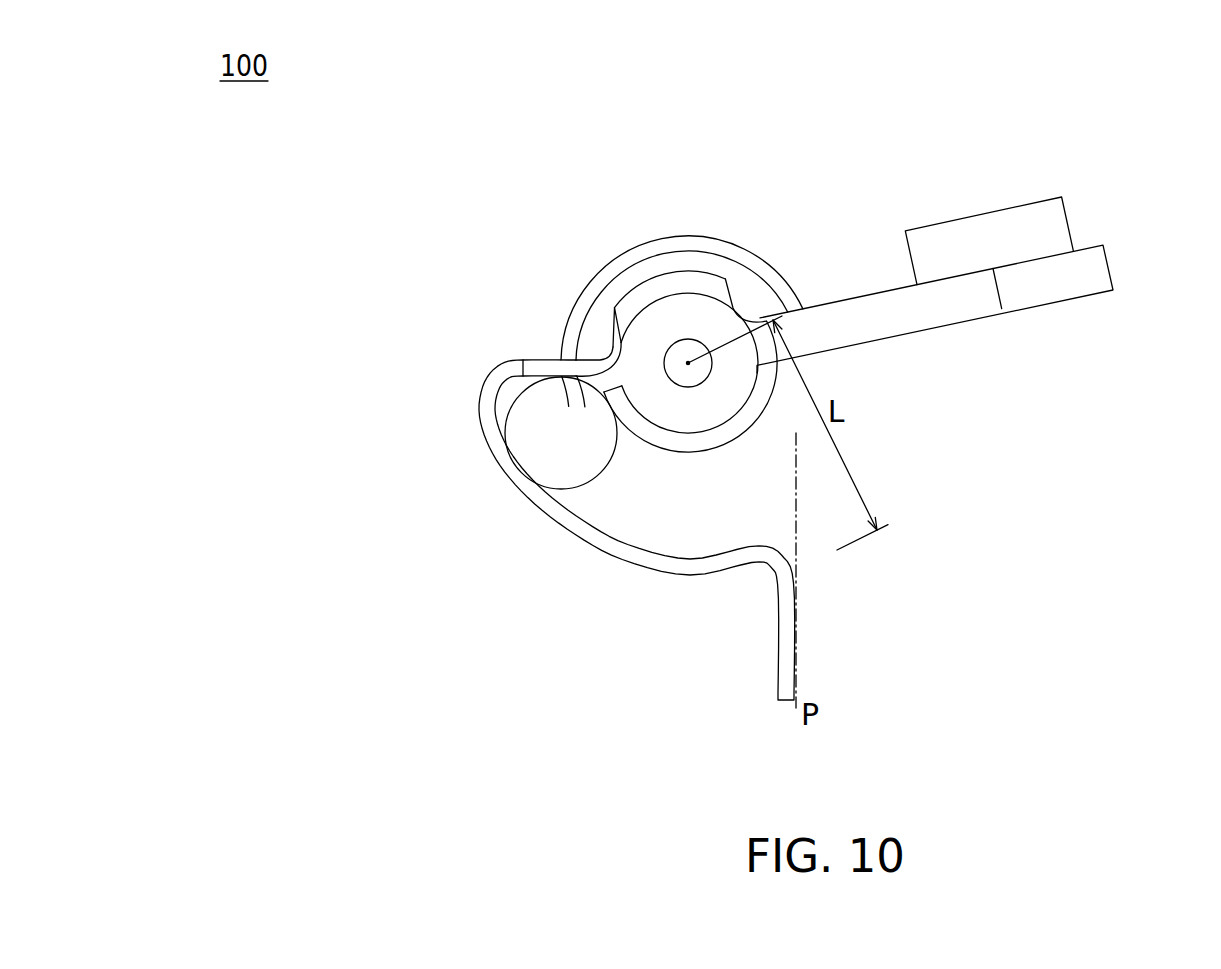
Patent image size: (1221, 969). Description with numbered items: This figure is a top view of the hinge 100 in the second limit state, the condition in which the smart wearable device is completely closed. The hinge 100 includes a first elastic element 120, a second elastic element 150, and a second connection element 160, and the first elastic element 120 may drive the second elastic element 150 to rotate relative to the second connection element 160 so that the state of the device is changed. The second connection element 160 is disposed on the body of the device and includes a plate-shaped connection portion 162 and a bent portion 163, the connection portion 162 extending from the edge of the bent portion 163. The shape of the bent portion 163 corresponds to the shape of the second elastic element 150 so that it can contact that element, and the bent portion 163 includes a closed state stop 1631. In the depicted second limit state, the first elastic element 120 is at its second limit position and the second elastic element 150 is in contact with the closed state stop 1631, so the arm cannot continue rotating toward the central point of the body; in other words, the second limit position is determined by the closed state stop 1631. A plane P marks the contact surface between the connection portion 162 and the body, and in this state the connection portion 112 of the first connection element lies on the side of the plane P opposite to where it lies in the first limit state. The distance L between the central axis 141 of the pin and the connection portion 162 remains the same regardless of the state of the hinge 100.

The hinge 100 is at (852, 304).
The connection portion 112 is at (1093, 270).
The first elastic element 120 is at (688, 245).
The central axis 141 is at (670, 372).
The second elastic element 150 is at (520, 434).
The second connection element 160 is at (610, 445).
The connection portion 162 is at (784, 682).
The bent portion 163 is at (565, 529).
The closed state stop 1631 is at (513, 372).